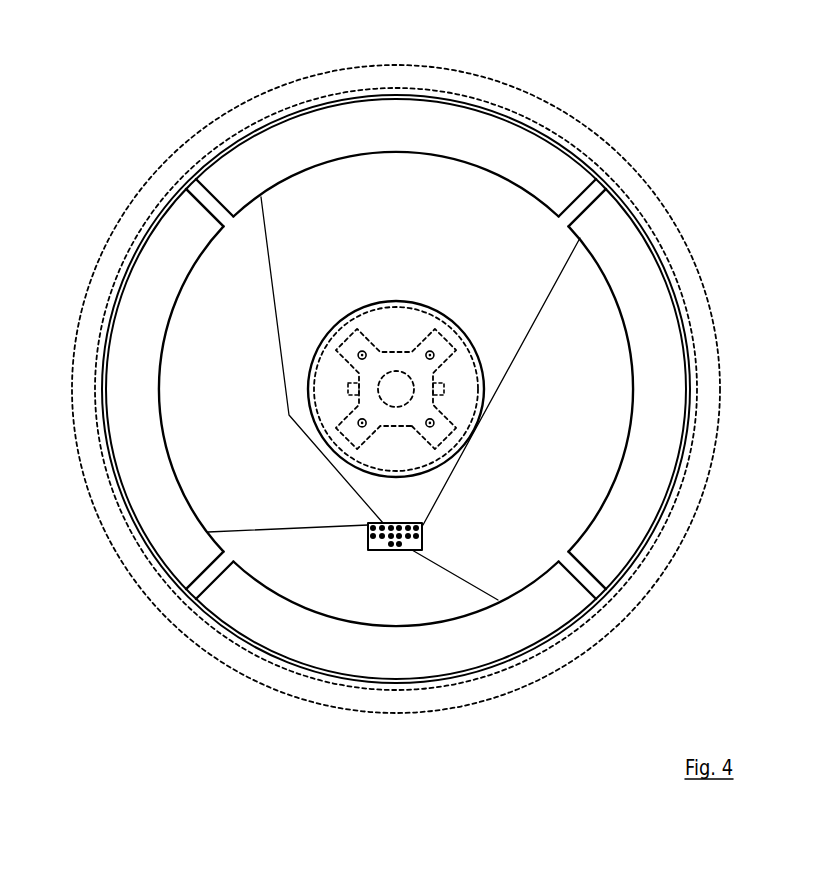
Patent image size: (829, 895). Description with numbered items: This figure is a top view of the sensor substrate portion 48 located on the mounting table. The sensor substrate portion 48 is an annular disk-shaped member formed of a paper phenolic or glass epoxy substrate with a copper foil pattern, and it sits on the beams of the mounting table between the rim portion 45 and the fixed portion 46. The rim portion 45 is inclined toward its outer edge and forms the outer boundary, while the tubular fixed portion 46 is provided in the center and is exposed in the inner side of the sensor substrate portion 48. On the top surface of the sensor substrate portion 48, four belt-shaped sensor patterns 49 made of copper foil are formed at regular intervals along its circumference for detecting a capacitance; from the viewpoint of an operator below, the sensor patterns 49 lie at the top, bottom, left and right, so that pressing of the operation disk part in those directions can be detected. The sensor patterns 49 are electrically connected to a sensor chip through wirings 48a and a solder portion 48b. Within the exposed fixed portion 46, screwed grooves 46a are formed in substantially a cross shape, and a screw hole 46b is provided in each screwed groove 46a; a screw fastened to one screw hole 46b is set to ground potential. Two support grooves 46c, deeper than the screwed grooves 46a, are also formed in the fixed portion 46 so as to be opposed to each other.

The rim portion 45 is at (168, 165).
The fixed portion 46 is at (397, 325).
The screwed grooves 46a is at (440, 345).
The screw hole 46b is at (360, 348).
The support grooves 46c is at (351, 392).
The sensor substrate portion 48 is at (363, 213).
The wirings 48a is at (272, 290).
The solder portion 48b is at (382, 550).
The sensor pattern 49 is at (487, 150).